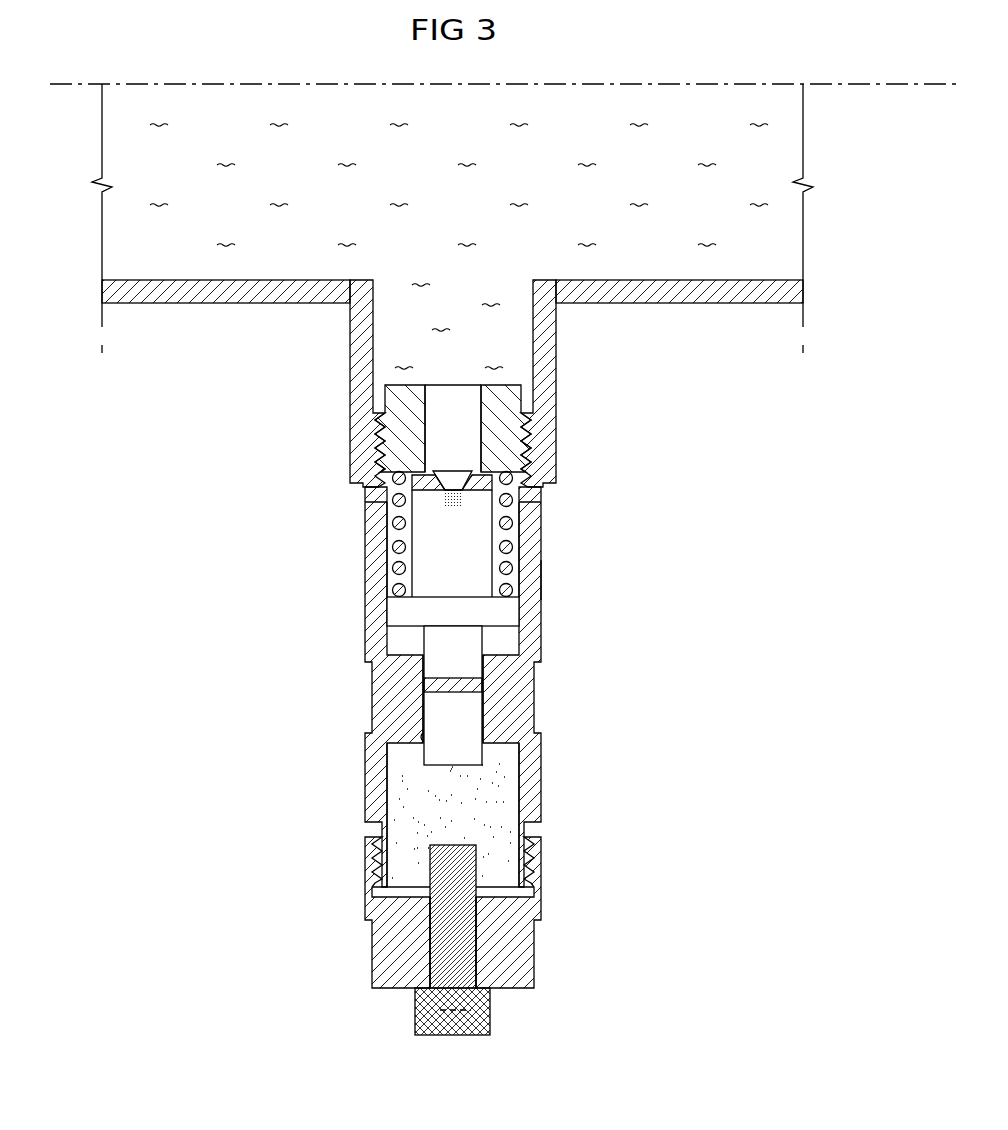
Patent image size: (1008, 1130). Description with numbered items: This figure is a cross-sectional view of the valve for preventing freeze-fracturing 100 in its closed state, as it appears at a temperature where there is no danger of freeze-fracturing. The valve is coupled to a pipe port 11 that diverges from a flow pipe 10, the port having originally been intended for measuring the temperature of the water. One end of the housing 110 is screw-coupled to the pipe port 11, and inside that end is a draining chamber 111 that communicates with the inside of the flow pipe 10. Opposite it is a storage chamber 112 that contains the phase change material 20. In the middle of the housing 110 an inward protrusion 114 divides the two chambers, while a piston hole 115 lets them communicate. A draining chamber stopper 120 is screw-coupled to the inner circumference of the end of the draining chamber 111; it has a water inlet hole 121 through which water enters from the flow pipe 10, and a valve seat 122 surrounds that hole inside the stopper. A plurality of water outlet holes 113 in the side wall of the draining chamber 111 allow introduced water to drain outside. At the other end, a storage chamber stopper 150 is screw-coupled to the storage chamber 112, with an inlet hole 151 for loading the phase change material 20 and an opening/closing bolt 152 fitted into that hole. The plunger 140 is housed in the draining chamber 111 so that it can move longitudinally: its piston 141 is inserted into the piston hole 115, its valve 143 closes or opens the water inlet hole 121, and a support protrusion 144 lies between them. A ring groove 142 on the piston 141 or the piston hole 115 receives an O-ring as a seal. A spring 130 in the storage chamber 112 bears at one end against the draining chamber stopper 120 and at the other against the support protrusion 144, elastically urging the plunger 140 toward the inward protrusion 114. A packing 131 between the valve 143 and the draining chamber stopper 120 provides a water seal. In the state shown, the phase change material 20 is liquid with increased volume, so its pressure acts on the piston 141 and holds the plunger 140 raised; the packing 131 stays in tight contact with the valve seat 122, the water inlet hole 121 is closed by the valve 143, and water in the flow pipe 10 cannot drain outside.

The flow pipe 10 is at (750, 300).
The pipe port 11 is at (362, 365).
The phase change material 20 is at (405, 810).
The valve for preventing freeze-fracturing 100 is at (455, 709).
The housing 110 is at (535, 703).
The draining chamber 111 is at (540, 583).
The storage chamber 112 is at (510, 800).
The water outlet holes 113 is at (535, 520).
The inward protrusion 114 is at (493, 670).
The piston hole 115 is at (425, 737).
The draining chamber stopper 120 is at (520, 398).
The water inlet hole 121 is at (441, 428).
The valve seat 122 is at (432, 487).
The spring 130 is at (398, 545).
The packing 131 is at (555, 482).
The plunger 140 is at (345, 620).
The piston 141 is at (436, 648).
The ring groove 142 is at (440, 687).
The valve 143 is at (437, 585).
The support protrusion 144 is at (398, 614).
The storage chamber stopper 150 is at (512, 968).
The inlet hole 151 is at (465, 937).
The opening/closing bolt 152 is at (455, 932).